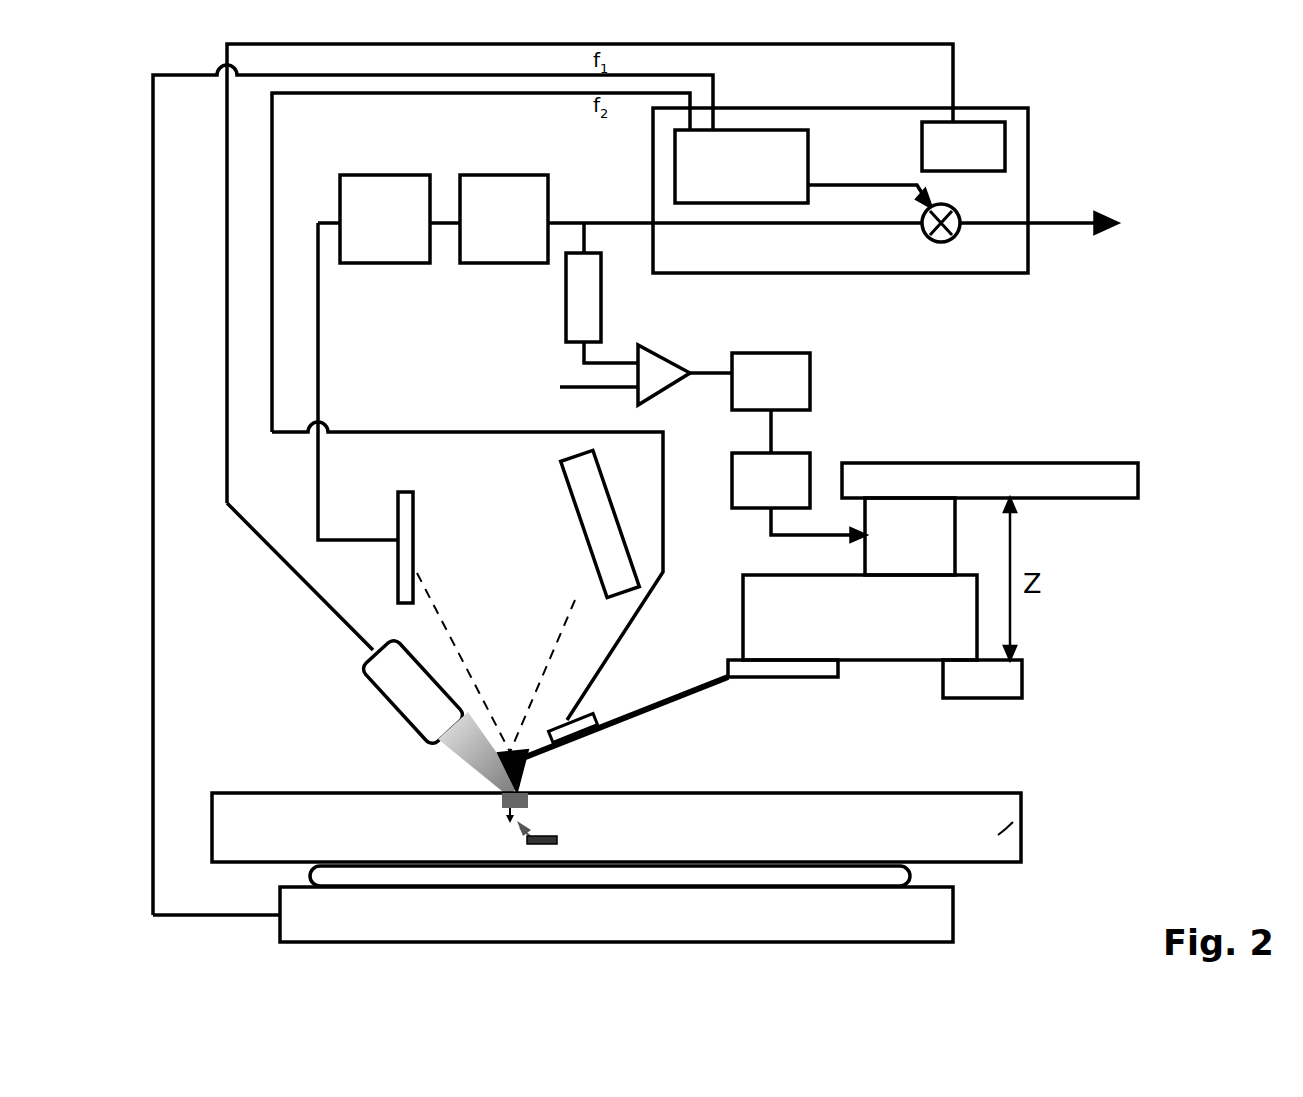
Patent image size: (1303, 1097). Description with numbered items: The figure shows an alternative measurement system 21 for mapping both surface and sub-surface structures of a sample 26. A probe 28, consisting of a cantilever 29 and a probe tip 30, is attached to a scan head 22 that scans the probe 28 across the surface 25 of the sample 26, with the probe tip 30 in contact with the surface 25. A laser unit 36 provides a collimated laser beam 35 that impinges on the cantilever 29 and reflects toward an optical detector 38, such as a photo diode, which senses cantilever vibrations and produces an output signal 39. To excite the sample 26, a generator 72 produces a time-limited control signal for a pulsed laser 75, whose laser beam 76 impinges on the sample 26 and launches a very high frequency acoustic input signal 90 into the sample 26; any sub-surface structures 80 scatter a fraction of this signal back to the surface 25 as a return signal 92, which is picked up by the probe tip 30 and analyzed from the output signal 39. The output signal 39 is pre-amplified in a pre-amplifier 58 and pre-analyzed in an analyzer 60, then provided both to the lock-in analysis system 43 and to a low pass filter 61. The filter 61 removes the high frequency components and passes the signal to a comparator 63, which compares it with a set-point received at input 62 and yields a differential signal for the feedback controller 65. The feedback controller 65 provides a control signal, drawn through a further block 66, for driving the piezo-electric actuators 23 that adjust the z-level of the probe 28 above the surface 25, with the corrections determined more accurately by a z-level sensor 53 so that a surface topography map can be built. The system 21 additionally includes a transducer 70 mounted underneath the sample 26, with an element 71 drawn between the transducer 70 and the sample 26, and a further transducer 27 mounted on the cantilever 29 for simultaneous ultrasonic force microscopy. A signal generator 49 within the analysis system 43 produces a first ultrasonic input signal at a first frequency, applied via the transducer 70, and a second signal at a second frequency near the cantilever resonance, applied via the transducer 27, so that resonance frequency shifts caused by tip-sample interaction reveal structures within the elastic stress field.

The system 21 is at (1133, 703).
The scan head 22 is at (880, 665).
The piezo-electric actuators 23 is at (910, 536).
The surface 25 is at (935, 790).
The sample 26 is at (1021, 830).
The transducer 27 is at (590, 718).
The probe 28 is at (703, 690).
The cantilever 29 is at (648, 708).
The probe tip 30 is at (522, 770).
The laser beam 35 is at (543, 673).
The laser unit 36 is at (567, 583).
The optical detector 38 is at (412, 497).
The output signal 39 is at (362, 540).
The analysis system 43 is at (975, 273).
The signal generator 49 is at (762, 130).
The z-level sensor 53 is at (965, 680).
The pre-amplifier 58 is at (362, 175).
The analyzer 60 is at (480, 175).
The low pass filter 61 is at (566, 310).
The input 62 is at (560, 388).
The comparator 63 is at (668, 358).
The feedback controller 65 is at (810, 385).
The actuator driver 66 is at (790, 453).
The transducer 70 is at (953, 912).
The acoustic transducer 71 is at (910, 875).
The generator 72 is at (1005, 145).
The pulsed laser 75 is at (383, 703).
The laser beam 76 is at (463, 752).
The structures 80 is at (558, 840).
The acoustic input signal 90 is at (530, 802).
The return signal 92 is at (517, 838).